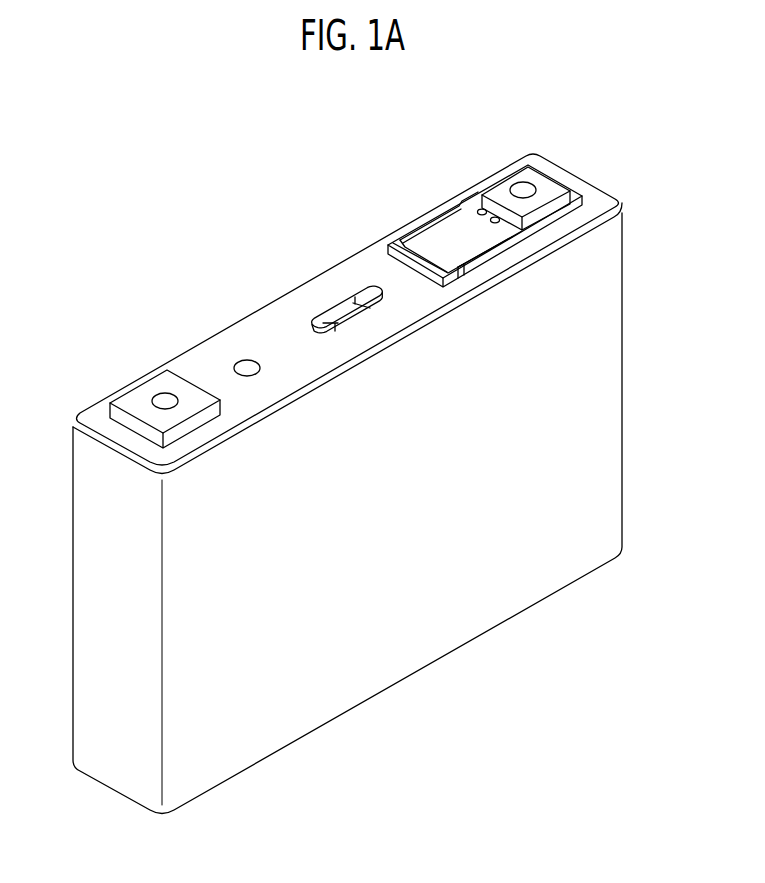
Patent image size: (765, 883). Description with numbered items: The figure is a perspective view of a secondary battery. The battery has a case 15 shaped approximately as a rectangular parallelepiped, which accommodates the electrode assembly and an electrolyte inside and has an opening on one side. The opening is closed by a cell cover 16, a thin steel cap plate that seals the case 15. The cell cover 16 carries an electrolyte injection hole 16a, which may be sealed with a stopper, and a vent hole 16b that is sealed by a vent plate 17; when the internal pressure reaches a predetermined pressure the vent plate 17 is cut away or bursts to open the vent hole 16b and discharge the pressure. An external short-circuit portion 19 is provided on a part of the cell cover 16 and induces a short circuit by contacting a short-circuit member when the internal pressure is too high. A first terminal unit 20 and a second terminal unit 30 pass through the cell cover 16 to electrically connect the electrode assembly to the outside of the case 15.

The case 15 is at (448, 642).
The cell cover 16 is at (280, 330).
The electrolyte injection hole 16a is at (243, 361).
The vent hole 16b is at (330, 308).
The vent plate 17 is at (352, 303).
The external short-circuit portion 19 is at (443, 228).
The first terminal unit 20 is at (144, 374).
The second terminal unit 30 is at (481, 181).